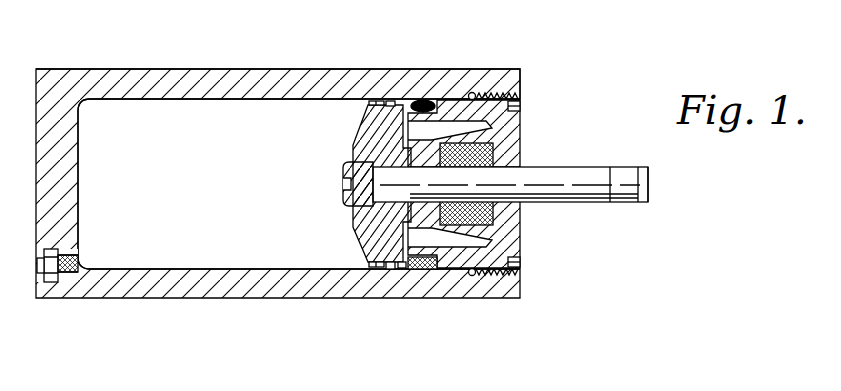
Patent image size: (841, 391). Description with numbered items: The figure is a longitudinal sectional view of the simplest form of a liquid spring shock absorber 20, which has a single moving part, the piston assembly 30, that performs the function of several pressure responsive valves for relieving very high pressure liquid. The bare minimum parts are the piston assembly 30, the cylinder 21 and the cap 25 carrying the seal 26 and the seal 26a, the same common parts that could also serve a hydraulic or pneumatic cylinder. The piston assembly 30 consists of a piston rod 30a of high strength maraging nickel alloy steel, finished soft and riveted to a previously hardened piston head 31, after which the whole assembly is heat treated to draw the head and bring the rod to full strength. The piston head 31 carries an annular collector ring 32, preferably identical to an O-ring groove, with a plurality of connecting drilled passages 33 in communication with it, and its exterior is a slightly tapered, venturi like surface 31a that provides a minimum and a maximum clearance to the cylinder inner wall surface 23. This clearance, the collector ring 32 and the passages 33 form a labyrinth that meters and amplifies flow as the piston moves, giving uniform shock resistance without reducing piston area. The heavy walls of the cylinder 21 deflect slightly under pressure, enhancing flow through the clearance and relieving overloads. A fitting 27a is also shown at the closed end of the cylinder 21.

The liquid spring shock absorber 20 is at (348, 177).
The cylinder 21 is at (200, 290).
The cylinder inner wall surface 23 is at (213, 100).
The cap 25 is at (523, 100).
The seal 26 is at (523, 222).
The seal 26a is at (422, 272).
The fill valve 27a is at (38, 268).
The piston assembly 30 is at (592, 152).
The piston rod 30a is at (608, 208).
The piston head 31 is at (355, 143).
The venturi like surface 31a is at (370, 268).
The annular collector ring 32 is at (390, 270).
The connecting drilled passages 33 is at (375, 100).